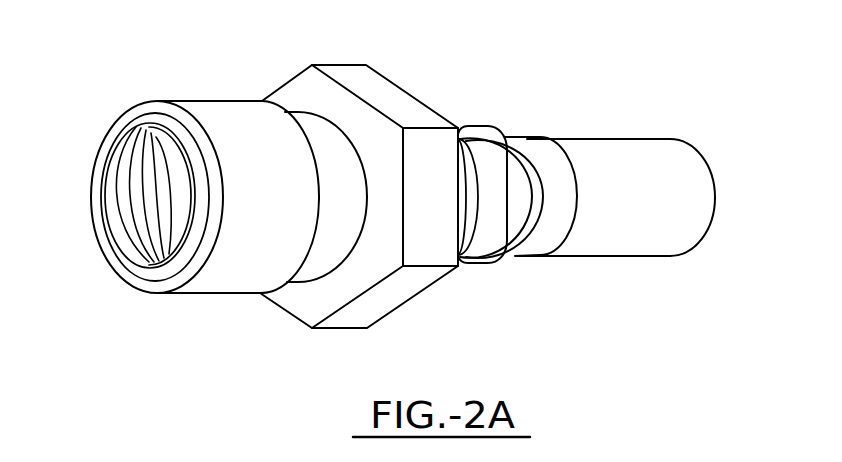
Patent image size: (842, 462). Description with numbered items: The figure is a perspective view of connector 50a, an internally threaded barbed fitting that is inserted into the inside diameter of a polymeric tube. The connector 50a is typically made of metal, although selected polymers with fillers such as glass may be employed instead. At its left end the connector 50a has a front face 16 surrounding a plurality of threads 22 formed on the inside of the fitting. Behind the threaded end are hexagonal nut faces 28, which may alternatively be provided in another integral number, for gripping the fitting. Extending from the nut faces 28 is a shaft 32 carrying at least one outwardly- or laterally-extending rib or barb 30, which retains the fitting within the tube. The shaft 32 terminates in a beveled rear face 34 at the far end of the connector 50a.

The front face 16 is at (112, 262).
The threads 22 is at (125, 158).
The nut faces 28 is at (377, 82).
The rib or barb 30 is at (493, 127).
The shaft 32 is at (640, 139).
The beveled rear face 34 is at (717, 210).
The connector 50a is at (568, 106).